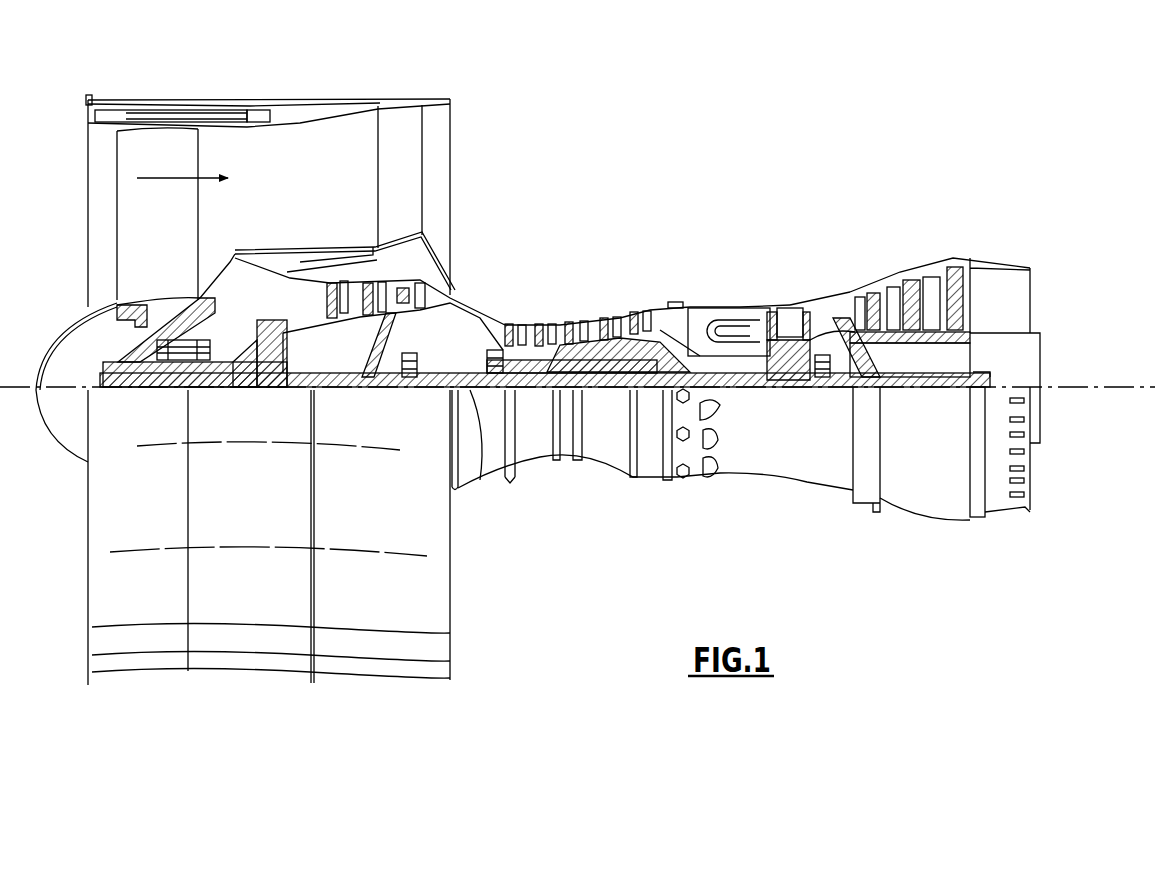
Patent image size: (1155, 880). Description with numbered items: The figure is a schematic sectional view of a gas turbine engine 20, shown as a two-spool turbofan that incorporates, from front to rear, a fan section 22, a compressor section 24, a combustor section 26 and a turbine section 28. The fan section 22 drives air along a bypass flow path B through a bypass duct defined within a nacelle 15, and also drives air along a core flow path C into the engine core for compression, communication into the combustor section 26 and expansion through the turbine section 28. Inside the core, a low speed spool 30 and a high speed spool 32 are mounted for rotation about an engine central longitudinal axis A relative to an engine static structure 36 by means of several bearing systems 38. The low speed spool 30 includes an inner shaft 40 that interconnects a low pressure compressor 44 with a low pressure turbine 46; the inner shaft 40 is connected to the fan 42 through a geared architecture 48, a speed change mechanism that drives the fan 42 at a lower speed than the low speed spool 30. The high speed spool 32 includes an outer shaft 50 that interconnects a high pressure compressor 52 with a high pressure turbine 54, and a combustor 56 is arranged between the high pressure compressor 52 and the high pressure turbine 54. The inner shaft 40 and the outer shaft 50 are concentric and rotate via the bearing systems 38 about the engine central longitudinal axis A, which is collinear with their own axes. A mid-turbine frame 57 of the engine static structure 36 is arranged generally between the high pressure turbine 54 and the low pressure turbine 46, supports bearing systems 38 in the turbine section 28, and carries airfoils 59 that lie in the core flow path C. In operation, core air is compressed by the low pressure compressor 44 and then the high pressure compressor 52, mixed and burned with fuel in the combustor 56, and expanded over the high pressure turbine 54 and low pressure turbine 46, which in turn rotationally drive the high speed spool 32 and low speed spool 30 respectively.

The nacelle 15 is at (270, 106).
The gas turbine engine 20 is at (732, 153).
The fan section 22 is at (200, 94).
The compressor section 24 is at (504, 291).
The combustor section 26 is at (726, 283).
The turbine section 28 is at (872, 245).
The low speed spool 30 is at (607, 392).
The high speed spool 32 is at (652, 316).
The engine static structure 36 is at (650, 480).
The bearing systems 38 is at (410, 380).
The inner shaft 40 is at (475, 392).
The fan 42 is at (172, 233).
The low pressure compressor 44 is at (370, 297).
The low pressure turbine 46 is at (917, 280).
The geared architecture 48 is at (271, 382).
The outer shaft 50 is at (738, 385).
The high pressure compressor 52 is at (583, 358).
The high pressure turbine 54 is at (791, 305).
The combustor 56 is at (723, 328).
The mid-turbine frame 57 is at (834, 293).
The airfoils 59 is at (840, 322).
The engine central longitudinal axis A is at (1120, 387).
The bypass flow path B is at (173, 177).
The core flow path C is at (272, 283).